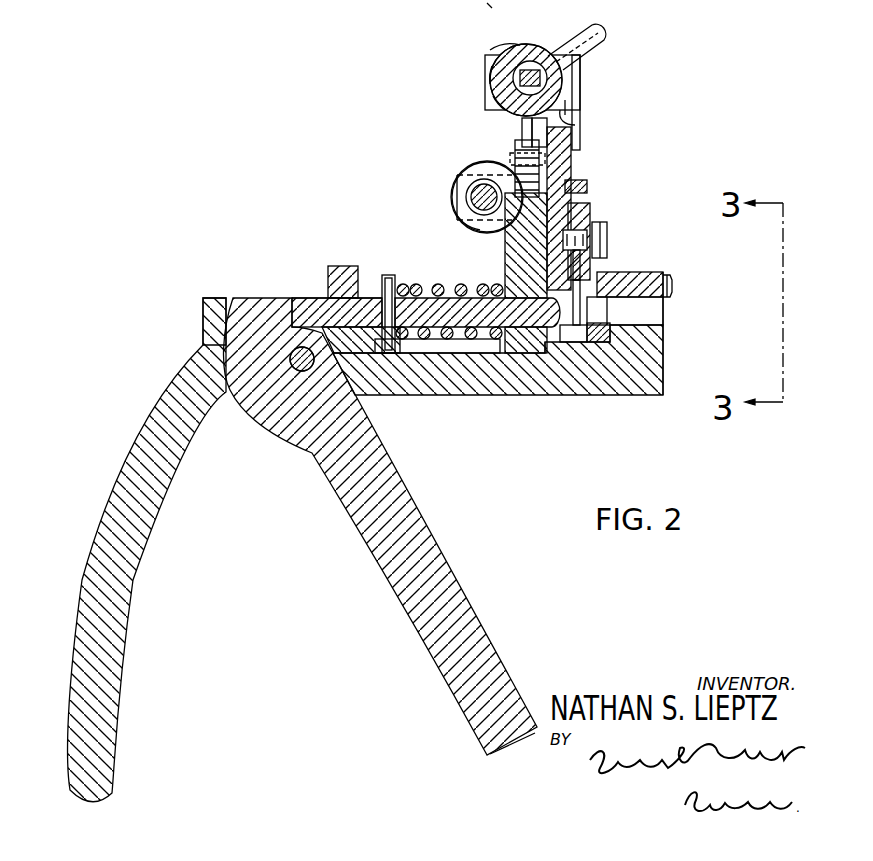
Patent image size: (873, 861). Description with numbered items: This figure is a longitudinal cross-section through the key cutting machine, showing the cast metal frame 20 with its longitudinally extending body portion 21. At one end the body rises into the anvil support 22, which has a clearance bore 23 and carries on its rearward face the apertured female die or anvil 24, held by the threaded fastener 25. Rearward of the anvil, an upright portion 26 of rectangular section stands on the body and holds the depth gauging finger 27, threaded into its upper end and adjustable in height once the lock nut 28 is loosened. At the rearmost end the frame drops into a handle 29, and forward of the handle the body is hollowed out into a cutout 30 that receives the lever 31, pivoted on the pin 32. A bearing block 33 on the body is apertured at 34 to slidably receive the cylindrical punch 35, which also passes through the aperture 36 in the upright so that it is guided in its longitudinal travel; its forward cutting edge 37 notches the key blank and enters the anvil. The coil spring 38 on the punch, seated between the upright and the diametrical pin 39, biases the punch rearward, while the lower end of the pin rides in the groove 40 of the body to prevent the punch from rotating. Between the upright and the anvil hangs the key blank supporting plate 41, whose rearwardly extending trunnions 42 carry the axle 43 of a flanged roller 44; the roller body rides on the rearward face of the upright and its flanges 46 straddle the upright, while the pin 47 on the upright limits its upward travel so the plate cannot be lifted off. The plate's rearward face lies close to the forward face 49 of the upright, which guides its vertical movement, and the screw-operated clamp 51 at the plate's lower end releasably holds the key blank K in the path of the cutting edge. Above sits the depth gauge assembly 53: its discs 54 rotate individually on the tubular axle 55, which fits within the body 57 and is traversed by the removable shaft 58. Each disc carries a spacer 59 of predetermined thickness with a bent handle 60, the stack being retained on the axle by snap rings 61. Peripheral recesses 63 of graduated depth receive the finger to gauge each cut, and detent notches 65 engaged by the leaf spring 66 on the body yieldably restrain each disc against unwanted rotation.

The frame 20 is at (597, 395).
The body portion 21 is at (462, 392).
The anvil support 22 is at (653, 272).
The clearance hole or bore 23 is at (653, 322).
The female die or anvil 24 is at (660, 335).
The threaded fastener 25 is at (672, 280).
The upright portion 26 is at (515, 233).
The depth gauging guide or finger 27 is at (520, 134).
The lock nut 28 is at (512, 156).
The handle or gripping portion 29 is at (100, 528).
The cut out portion 30 is at (238, 300).
The lever 31 is at (370, 537).
The pin 32 is at (246, 415).
The bearing block 33 is at (341, 266).
The aperture 34 is at (300, 298).
The punch or die 35 is at (370, 297).
The aperture 36 is at (540, 365).
The cutting edge 37 is at (570, 330).
The coil spring 38 is at (464, 290).
The pin 39 is at (393, 353).
The groove 40 is at (432, 353).
The key blank supporting member 41 is at (549, 200).
The journal arms or trunnions 42 is at (458, 180).
The axle 43 is at (468, 195).
The flanged roller 44 is at (483, 208).
The flange portions 46 is at (470, 221).
The pin or abutment 47 is at (492, 163).
The forward face 49 is at (575, 193).
The key blank securing means 51 is at (592, 212).
The depth gauge assembly 53 is at (497, 53).
The discs 54 is at (525, 52).
The tubular axle 55 is at (513, 77).
The body 57 is at (582, 89).
The shaft 58 is at (488, 86).
The spacer element 59 is at (556, 77).
The extension or handle 60 is at (600, 38).
The snap rings 61 is at (487, 3).
The peripheral pockets or recesses 63 is at (490, 98).
The detent notches 65 is at (565, 118).
The leaf spring 66 is at (570, 110).
The key blank K is at (577, 272).